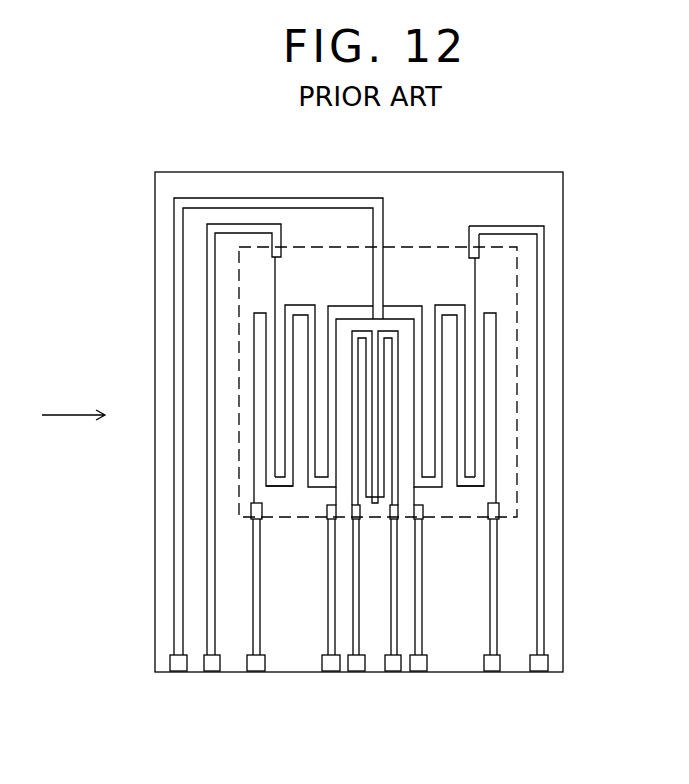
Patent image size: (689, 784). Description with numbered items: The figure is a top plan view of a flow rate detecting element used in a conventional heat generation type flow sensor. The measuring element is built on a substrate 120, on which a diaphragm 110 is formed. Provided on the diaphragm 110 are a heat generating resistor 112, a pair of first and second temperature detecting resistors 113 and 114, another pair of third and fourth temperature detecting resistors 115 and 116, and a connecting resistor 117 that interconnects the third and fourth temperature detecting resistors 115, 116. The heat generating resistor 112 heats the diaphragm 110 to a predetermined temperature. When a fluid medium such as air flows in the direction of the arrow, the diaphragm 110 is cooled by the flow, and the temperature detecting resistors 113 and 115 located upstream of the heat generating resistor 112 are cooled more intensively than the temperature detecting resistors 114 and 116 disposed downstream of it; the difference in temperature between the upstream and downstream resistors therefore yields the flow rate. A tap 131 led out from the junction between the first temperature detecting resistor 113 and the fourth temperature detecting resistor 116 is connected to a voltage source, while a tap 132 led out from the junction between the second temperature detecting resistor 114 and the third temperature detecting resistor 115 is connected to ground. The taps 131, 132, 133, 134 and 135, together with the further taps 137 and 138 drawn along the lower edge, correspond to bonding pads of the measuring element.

The diaphragm 110 is at (433, 247).
The heat generating resistor 112 is at (393, 412).
The first temperature detecting resistor 113 is at (300, 305).
The second temperature detecting resistor 114 is at (447, 305).
The third temperature detecting resistor 115 is at (283, 488).
The fourth temperature detecting resistor 116 is at (462, 488).
The connecting resistor 117 is at (383, 300).
The substrate 120 is at (563, 313).
The tap 131 is at (212, 672).
The tap 132 is at (255, 672).
The tap 133 is at (180, 672).
The tap 134 is at (330, 672).
The tap 135 is at (419, 672).
The electrode pad 137 is at (357, 672).
The electrode pad 138 is at (393, 672).